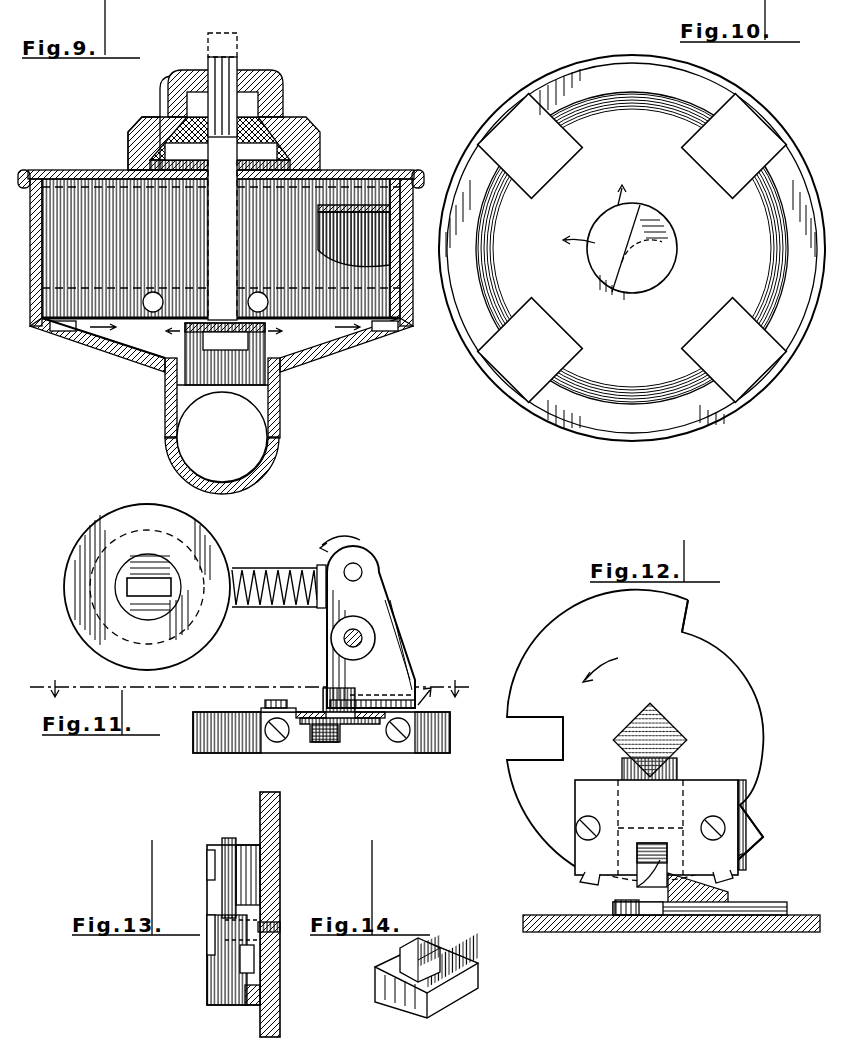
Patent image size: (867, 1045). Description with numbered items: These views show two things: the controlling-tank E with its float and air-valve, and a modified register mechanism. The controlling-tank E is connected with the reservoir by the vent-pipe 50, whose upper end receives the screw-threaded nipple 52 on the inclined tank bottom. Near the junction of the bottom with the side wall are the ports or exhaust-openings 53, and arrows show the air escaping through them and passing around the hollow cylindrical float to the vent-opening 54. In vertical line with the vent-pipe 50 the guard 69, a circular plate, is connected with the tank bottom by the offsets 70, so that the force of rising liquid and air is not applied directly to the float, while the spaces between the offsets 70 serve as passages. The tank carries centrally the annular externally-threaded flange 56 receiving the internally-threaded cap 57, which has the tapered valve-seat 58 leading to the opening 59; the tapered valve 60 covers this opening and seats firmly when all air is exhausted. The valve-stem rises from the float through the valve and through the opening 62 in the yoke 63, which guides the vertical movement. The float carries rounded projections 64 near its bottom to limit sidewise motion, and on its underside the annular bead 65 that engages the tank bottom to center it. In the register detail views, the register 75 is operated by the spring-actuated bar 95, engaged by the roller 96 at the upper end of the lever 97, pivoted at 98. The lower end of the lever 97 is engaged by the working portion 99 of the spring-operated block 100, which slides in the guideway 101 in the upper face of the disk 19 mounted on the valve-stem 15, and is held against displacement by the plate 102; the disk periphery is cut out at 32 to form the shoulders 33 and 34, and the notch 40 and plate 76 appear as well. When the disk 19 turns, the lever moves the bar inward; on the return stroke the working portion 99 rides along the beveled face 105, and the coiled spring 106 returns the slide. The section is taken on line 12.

In FIG. 9, the controlling-tank E is at (360, 178).
In FIG. 10, the controlling-tank E is at (592, 60).
In FIG. 9, the vent-pipe 50 is at (222, 437).
In FIG. 9, the screw-threaded nipple 52 is at (170, 380).
In FIG. 9, the ports or exhaust-openings 53 is at (68, 332).
In FIG. 10, the ports or exhaust-openings 53 is at (630, 248).
In FIG. 9, the vent-opening 54 is at (200, 150).
In FIG. 9, the annular externally-threaded flange 56 is at (318, 158).
In FIG. 9, the internally-threaded cap 57 is at (300, 142).
In FIG. 9, the tapered valve-seat 58 is at (268, 130).
In FIG. 9, the opening in cap 59 is at (190, 108).
In FIG. 9, the tapered valve 60 is at (128, 150).
In FIG. 9, the opening in yoke 62 is at (240, 72).
In FIG. 9, the yoke 63 is at (275, 88).
In FIG. 9, the rounded projections 64 is at (155, 292).
In FIG. 9, the annular projection or bead 65 is at (400, 330).
In FIG. 9, the guard 69 is at (228, 330).
In FIG. 10, the guard 69 is at (677, 238).
In FIG. 9, the offsets 70 is at (178, 358).
In FIG. 10, the offsets 70 is at (604, 222).
In FIG. 11, the section line 12 is at (257, 682).
In FIG. 12, the valve-stem 15 is at (655, 715).
In FIG. 11, the disk or stop 19 is at (200, 745).
In FIG. 12, the disk or stop 19 is at (620, 669).
In FIG. 12, the cut-out of disk periphery 32 is at (765, 770).
In FIG. 12, the shoulder 33 is at (750, 832).
In FIG. 12, the shoulder 34 is at (690, 612).
In FIG. 12, the notch 40 is at (541, 738).
In FIG. 11, the register 75 is at (210, 555).
In FIG. 12, the plate 76 is at (565, 938).
In FIG. 13, the plate 76 is at (282, 878).
In FIG. 11, the spring-actuated register-operating bar 95 is at (298, 545).
In FIG. 11, the roller 96 is at (380, 580).
In FIG. 13, the roller 96 is at (228, 840).
In FIG. 11, the lever 97 is at (380, 620).
In FIG. 12, the lever 97 is at (740, 896).
In FIG. 13, the lever 97 is at (228, 970).
In FIG. 11, the pivot 98 is at (343, 648).
In FIG. 13, the pivot 98 is at (280, 922).
In FIG. 11, the working portion 99 is at (333, 695).
In FIG. 12, the working portion 99 is at (668, 848).
In FIG. 14, the working portion 99 is at (400, 952).
In FIG. 11, the spring-operated block 100 is at (338, 748).
In FIG. 12, the spring-operated block 100 is at (628, 818).
In FIG. 14, the spring-operated block 100 is at (478, 980).
In FIG. 11, the guideway 101 is at (365, 750).
In FIG. 12, the guideway 101 is at (700, 790).
In FIG. 11, the plate 102 is at (402, 748).
In FIG. 12, the plate 102 is at (582, 878).
In FIG. 11, the beveled face 105 is at (405, 690).
In FIG. 12, the beveled face 105 is at (732, 880).
In FIG. 12, the coiled spring 106 is at (680, 790).